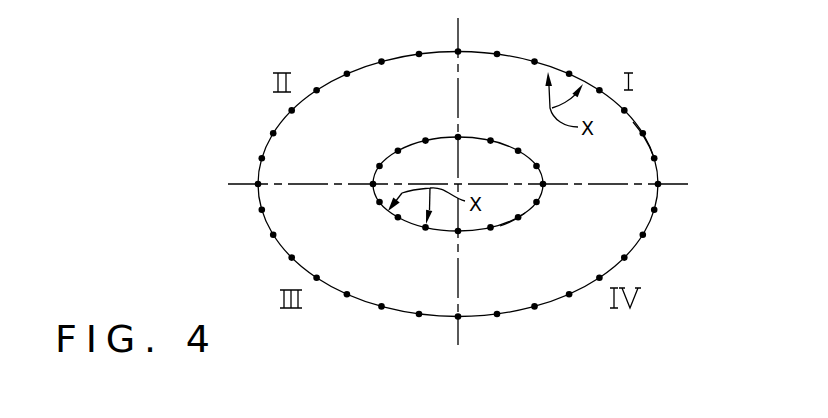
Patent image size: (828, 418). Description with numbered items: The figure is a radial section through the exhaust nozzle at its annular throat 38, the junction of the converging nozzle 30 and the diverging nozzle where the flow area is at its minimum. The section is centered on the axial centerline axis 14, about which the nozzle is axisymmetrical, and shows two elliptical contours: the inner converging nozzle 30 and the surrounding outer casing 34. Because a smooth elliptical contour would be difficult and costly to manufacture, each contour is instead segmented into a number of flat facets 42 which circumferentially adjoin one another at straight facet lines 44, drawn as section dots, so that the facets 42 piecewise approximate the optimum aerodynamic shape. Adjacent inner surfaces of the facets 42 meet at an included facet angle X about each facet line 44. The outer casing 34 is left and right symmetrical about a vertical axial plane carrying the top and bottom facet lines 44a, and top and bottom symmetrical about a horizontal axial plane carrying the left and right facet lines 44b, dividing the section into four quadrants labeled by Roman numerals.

The axial centerline axis 14 is at (460, 184).
The converging nozzle 30 is at (417, 143).
The outer casing 34 is at (366, 66).
The annular throat 38 is at (436, 177).
The flat facets 42 is at (633, 122).
The facet lines 44 is at (379, 166).
The top and bottom facet lines 44a is at (459, 318).
The left and right facet lines 44b is at (659, 183).